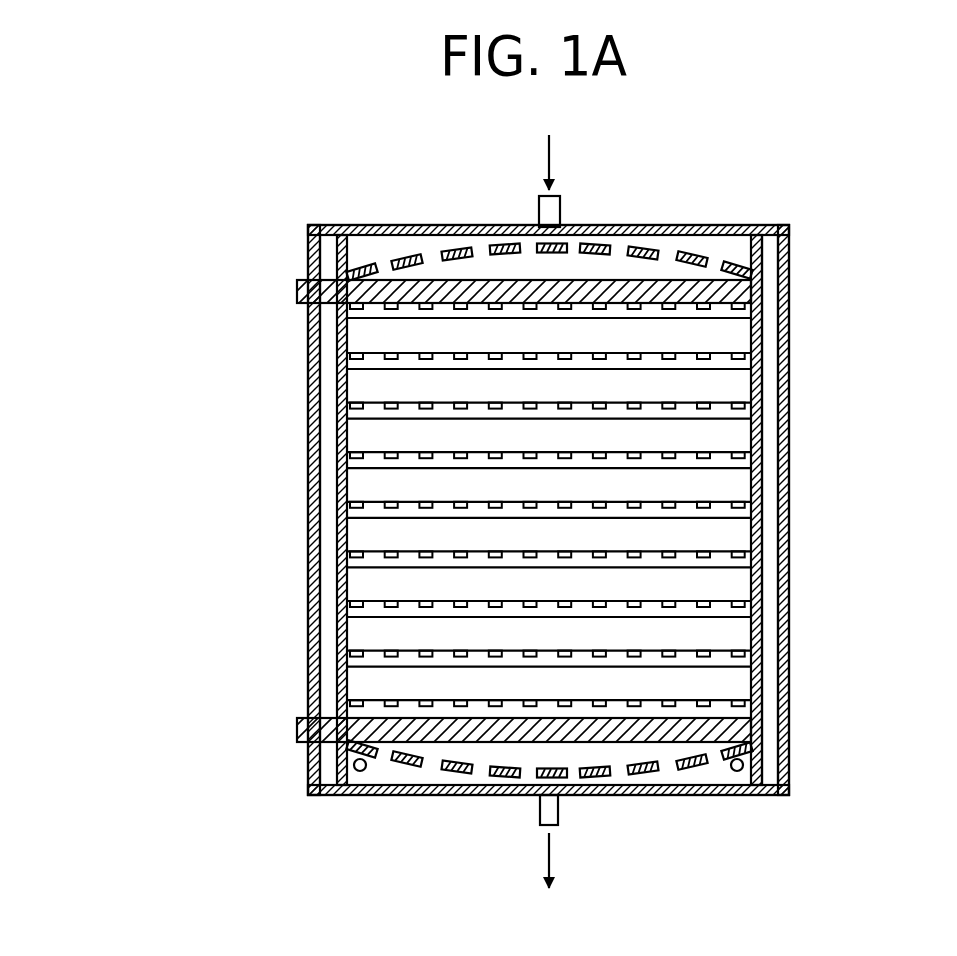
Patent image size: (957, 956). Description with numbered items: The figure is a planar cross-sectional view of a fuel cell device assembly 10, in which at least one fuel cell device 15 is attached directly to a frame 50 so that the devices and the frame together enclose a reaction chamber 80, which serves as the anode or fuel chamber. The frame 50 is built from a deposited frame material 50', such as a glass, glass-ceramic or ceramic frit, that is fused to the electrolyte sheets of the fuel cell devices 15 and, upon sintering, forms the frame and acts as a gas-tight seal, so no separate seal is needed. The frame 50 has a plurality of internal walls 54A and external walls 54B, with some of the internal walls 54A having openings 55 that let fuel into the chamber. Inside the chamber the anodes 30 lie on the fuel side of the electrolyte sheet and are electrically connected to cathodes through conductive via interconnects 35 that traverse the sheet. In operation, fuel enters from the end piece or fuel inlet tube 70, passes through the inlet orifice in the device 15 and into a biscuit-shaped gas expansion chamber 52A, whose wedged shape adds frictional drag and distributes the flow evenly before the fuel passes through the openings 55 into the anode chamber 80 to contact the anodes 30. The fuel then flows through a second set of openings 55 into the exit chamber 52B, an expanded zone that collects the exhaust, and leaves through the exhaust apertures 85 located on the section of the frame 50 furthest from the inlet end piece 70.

The fuel cell device assembly 10 is at (266, 222).
The fuel cell device 15 is at (766, 430).
The anode 30 is at (720, 338).
The via interconnect 35 is at (703, 358).
The frame 50 is at (514, 466).
The frame material 50' is at (750, 735).
The gas expansion chamber 52A is at (386, 250).
The exit chamber 52B is at (720, 777).
The internal wall 54A is at (600, 246).
The external wall 54B is at (715, 226).
The opening 55 is at (524, 250).
The fuel inlet tube 70 is at (562, 208).
The reaction chamber 80 is at (655, 268).
The exhaust aperture 85 is at (560, 828).